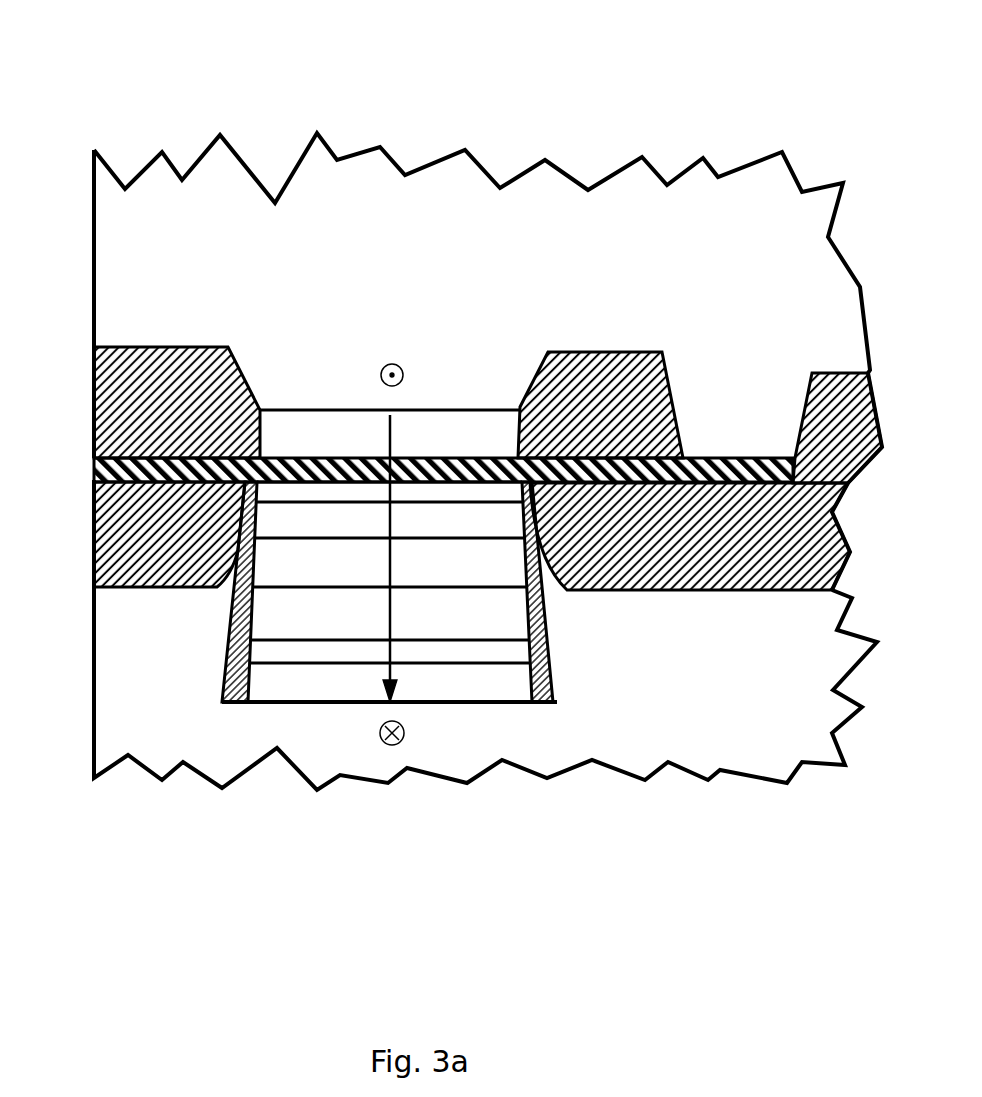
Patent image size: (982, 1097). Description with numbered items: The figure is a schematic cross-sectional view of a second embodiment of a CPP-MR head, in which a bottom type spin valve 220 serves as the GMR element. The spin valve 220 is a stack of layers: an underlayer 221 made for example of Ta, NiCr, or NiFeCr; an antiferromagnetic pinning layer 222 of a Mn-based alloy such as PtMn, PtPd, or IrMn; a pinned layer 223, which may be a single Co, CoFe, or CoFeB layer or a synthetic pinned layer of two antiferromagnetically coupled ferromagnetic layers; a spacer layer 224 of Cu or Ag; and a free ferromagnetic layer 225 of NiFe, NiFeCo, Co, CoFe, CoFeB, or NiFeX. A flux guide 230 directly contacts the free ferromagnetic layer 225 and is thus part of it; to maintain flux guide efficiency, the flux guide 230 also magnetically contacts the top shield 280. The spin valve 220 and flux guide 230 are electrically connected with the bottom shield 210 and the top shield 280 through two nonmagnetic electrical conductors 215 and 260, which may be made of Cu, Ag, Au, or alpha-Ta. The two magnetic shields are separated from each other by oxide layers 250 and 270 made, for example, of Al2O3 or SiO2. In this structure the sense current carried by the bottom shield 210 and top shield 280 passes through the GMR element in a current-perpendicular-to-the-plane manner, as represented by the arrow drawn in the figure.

The bottom shield 210 is at (123, 730).
The nonmagnetic electrical conductor 215 is at (265, 685).
The bottom type spin valve 220 is at (228, 618).
The underlayer 221 is at (297, 650).
The antiferromagnetic pinning layer 222 is at (347, 622).
The pinned layer 223 is at (425, 570).
The spacer layer 224 is at (462, 517).
The free ferromagnetic layer 225 is at (478, 493).
The flux guide 230 is at (100, 473).
The oxide layer 250 is at (122, 550).
The nonmagnetic electrical conductor 260 is at (330, 435).
The oxide layer 270 is at (837, 423).
The top shield 280 is at (150, 215).